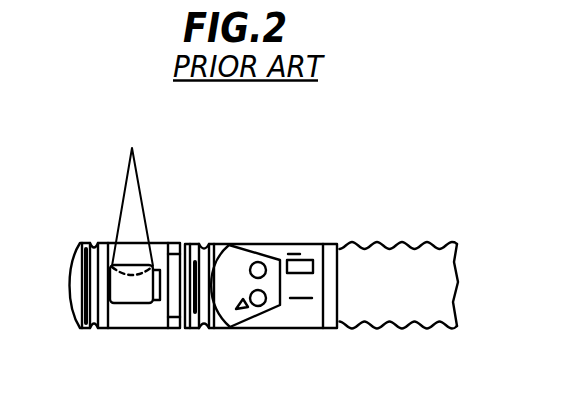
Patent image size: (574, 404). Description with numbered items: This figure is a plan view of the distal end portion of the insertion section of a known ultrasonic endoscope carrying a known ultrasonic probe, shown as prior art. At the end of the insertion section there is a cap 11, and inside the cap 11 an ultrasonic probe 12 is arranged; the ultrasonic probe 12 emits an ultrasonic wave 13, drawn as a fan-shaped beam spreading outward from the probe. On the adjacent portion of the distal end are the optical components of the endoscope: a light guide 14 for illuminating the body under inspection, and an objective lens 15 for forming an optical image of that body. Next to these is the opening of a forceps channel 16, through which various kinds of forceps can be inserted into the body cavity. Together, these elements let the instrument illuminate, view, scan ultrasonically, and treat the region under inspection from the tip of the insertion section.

The cap 11 is at (115, 317).
The ultrasonic probe 12 is at (140, 294).
The ultrasonic wave 13 is at (139, 185).
The light guide 14 is at (260, 262).
The objective lens 15 is at (258, 306).
The opening of a forceps channel 16 is at (305, 262).